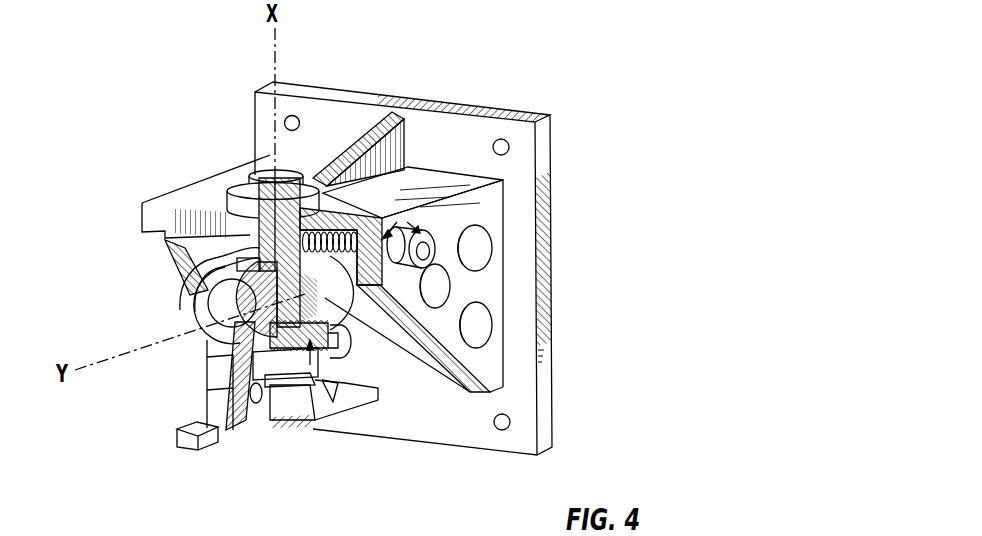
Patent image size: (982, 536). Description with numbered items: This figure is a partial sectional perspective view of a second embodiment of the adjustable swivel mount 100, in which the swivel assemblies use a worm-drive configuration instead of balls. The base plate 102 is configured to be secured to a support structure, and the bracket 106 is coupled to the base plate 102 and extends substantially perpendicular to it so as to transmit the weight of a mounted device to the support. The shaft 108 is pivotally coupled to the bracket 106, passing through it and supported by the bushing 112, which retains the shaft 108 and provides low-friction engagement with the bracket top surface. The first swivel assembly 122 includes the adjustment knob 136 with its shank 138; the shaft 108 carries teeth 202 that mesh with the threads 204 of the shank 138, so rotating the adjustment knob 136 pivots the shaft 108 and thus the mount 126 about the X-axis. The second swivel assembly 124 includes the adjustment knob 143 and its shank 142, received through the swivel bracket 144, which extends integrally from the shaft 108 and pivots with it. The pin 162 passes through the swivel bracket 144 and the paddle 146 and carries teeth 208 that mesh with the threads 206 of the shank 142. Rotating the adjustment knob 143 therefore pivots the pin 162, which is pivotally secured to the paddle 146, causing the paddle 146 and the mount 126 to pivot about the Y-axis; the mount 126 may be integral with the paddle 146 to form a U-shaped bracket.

The adjustable swivel mount 100 is at (556, 60).
The base plate 102 is at (552, 268).
The bracket 106 is at (498, 255).
The shaft 108 is at (283, 178).
The bushing 112 is at (228, 205).
The first swivel assembly 122 is at (563, 197).
The second swivel assembly 124 is at (408, 432).
The mount 126 is at (187, 443).
The adjustment knob 136 is at (405, 265).
The shank 138 is at (432, 284).
The shank 142 is at (302, 400).
The adjustment knob 143 is at (378, 357).
The swivel bracket 144 is at (152, 231).
The paddle 146 is at (223, 378).
The pin 162 is at (223, 298).
The teeth 202 is at (190, 268).
The threads 204 is at (322, 298).
The threads 206 is at (310, 365).
The teeth 208 is at (372, 355).